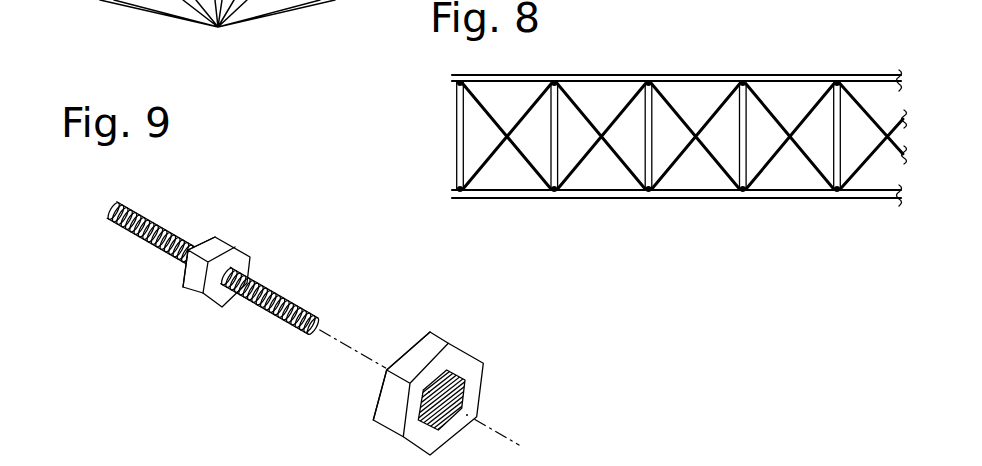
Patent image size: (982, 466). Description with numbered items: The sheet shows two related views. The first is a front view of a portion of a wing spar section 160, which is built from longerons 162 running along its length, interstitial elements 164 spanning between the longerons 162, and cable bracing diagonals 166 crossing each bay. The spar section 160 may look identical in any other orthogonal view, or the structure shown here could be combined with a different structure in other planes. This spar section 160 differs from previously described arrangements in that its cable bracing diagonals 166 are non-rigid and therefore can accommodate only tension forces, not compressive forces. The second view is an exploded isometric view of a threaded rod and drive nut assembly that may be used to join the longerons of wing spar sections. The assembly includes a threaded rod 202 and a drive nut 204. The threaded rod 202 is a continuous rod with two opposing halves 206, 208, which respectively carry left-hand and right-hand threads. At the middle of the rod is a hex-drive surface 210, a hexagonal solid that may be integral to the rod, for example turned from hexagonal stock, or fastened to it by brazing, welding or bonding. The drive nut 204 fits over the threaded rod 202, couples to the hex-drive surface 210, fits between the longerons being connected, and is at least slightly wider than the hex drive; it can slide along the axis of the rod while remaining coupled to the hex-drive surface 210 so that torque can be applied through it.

In FIG. 8, the wing spar section 160 is at (686, 113).
In FIG. 8, the longerons 162 is at (508, 76).
In FIG. 8, the interstitial elements 164 is at (834, 119).
In FIG. 8, the cable bracing diagonals 166 is at (664, 93).
In FIG. 9, the threaded rod 202 is at (316, 316).
In FIG. 9, the drive nut 204 is at (462, 353).
In FIG. 9, the half of threaded rod 206 is at (278, 291).
In FIG. 9, the half of threaded rod 208 is at (156, 216).
In FIG. 9, the hex-drive surface 210 is at (232, 243).